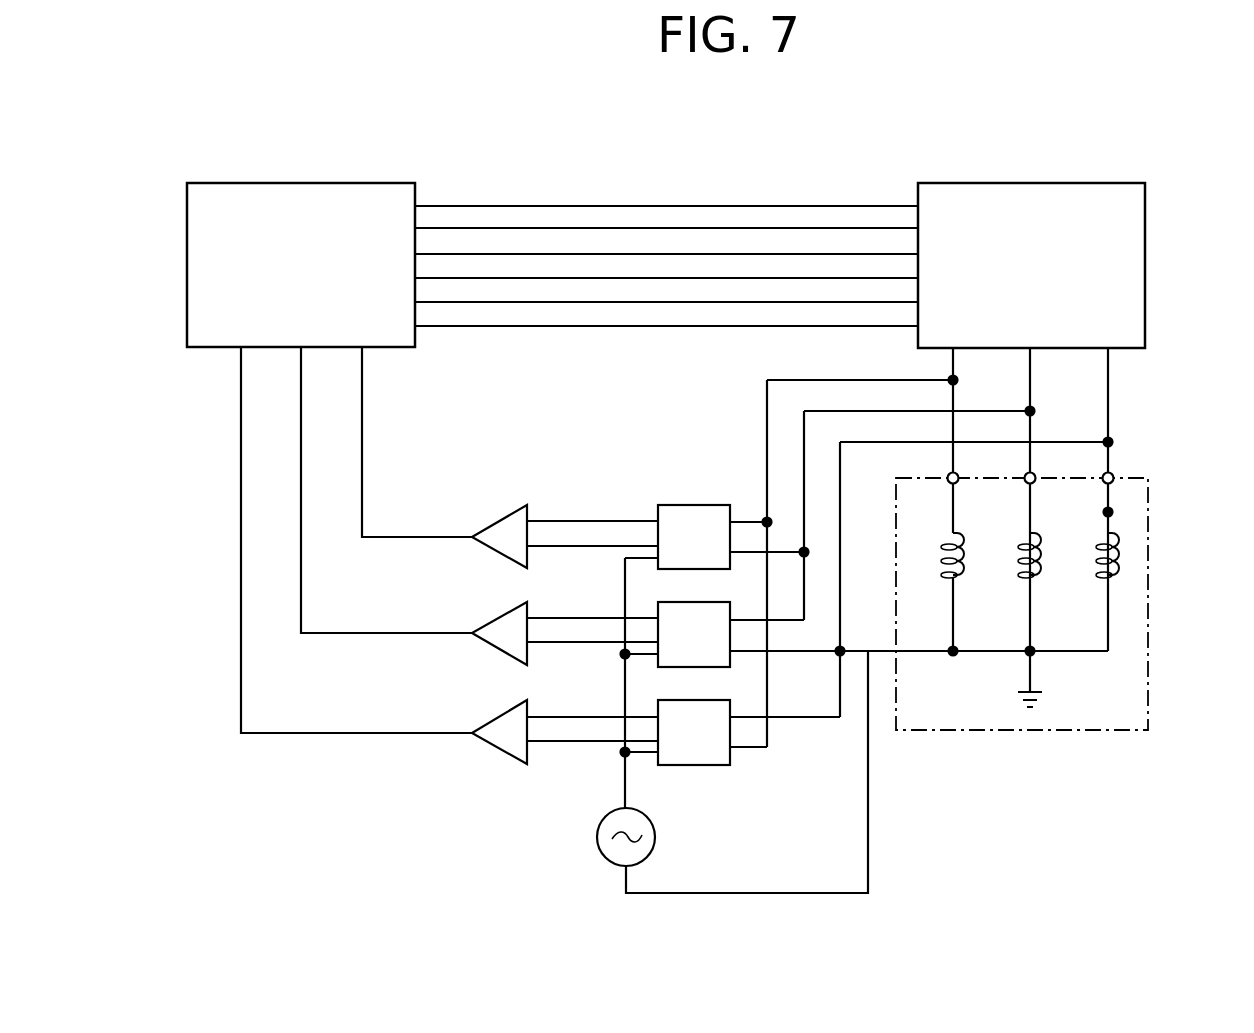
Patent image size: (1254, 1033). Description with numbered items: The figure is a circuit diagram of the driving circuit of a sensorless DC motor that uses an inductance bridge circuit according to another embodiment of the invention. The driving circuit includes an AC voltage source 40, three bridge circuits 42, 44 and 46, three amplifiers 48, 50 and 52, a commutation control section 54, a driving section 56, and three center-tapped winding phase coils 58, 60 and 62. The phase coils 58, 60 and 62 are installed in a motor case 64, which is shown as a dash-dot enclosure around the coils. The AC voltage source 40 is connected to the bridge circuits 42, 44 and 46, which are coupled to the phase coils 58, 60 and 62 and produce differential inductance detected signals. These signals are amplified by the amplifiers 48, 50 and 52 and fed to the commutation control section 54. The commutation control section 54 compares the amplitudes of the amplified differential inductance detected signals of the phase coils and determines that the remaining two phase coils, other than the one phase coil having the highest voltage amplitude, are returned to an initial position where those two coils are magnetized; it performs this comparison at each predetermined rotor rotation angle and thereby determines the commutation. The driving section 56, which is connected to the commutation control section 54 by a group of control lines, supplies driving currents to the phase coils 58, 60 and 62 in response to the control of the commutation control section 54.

The AC voltage source 40 is at (596, 836).
The bridge circuit 42 is at (694, 537).
The bridge circuit 44 is at (694, 634).
The bridge circuit 46 is at (694, 732).
The amplifier 48 is at (499, 521).
The amplifier 50 is at (499, 617).
The amplifier 52 is at (499, 717).
The commutation control section 54 is at (299, 183).
The driving section 56 is at (1029, 183).
The center-tapped winding phase coil 58 is at (947, 547).
The center-tapped winding phase coil 60 is at (1024, 547).
The center-tapped winding phase coil 62 is at (1102, 547).
The motor case 64 is at (1149, 606).